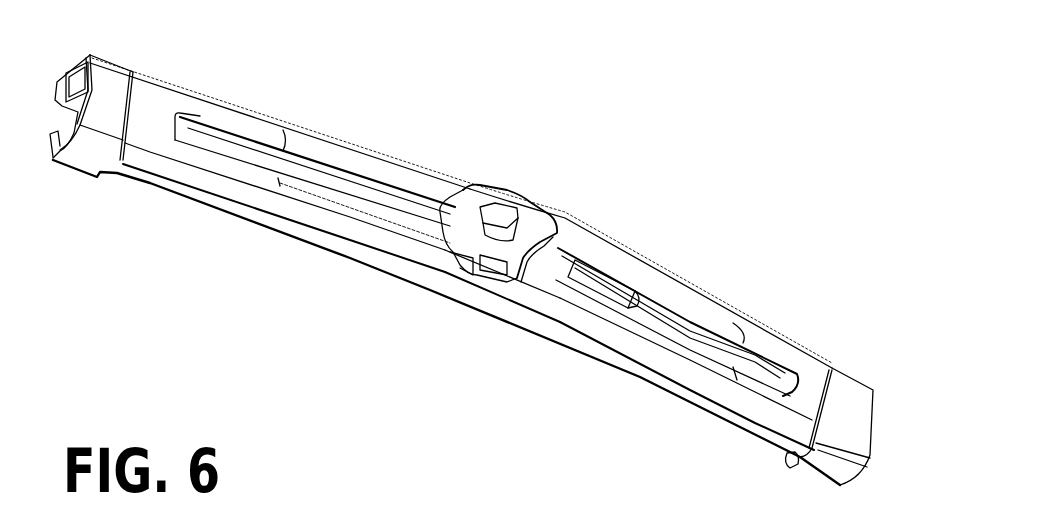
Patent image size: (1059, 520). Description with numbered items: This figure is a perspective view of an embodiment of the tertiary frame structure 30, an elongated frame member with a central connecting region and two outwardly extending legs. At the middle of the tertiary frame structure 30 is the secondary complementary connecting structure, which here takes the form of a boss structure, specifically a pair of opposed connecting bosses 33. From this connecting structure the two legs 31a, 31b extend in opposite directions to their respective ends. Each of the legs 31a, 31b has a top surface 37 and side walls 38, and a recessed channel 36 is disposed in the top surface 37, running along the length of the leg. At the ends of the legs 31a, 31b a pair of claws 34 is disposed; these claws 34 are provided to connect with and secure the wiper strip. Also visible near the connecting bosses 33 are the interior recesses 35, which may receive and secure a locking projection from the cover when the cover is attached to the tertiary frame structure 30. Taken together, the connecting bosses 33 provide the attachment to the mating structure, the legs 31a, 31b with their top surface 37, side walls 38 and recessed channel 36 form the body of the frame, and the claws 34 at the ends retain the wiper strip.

The tertiary frame structure 30 is at (627, 196).
The leg 31a is at (378, 120).
The leg 31b is at (767, 280).
The connecting boss 33 is at (482, 200).
The claw 34 is at (57, 163).
The interior recess 35 is at (608, 278).
The recessed channel 36 is at (213, 133).
The top surface 37 is at (158, 107).
The side wall 38 is at (492, 296).